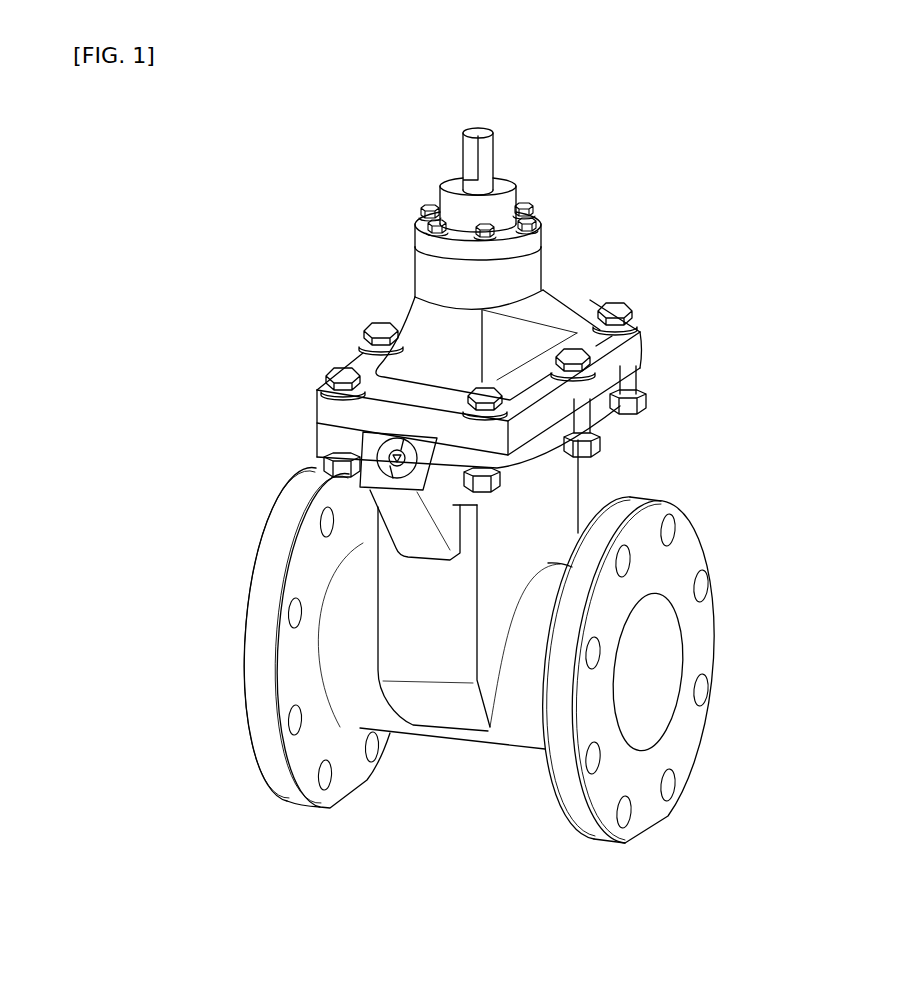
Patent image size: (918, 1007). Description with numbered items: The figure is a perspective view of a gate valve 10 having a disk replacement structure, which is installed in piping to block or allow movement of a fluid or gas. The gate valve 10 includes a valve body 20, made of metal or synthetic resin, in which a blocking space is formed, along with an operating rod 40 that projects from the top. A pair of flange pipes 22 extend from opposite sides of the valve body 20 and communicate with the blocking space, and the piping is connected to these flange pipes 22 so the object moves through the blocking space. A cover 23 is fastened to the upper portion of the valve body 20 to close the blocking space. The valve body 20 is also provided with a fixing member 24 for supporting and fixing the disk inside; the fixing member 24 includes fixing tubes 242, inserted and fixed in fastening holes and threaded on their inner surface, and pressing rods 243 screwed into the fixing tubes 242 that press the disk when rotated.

The gate valve 10 is at (287, 244).
The valve body 20 is at (443, 677).
The flange pipes 22 is at (330, 653).
The cover 23 is at (544, 300).
The fixing member 24 is at (292, 422).
The operating rod 40 is at (473, 142).
The fixing tubes 242 is at (417, 458).
The pressing rods 243 is at (326, 458).